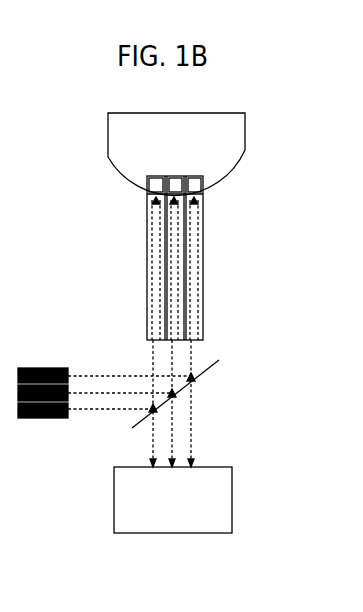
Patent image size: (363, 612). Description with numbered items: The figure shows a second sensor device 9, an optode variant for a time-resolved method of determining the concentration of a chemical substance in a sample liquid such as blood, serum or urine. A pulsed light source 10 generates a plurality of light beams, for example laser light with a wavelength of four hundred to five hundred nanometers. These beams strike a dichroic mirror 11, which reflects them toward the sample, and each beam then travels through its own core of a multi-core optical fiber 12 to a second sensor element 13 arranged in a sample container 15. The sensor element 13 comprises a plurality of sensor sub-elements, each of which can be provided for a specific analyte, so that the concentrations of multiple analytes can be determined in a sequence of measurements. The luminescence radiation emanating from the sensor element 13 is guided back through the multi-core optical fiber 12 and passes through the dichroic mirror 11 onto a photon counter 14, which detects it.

The second sensor device 9 is at (287, 200).
The pulsed light source 10 is at (30, 368).
The dichroic mirror 11 is at (212, 372).
The multi-core optical fiber 12 is at (207, 320).
The second sensor element 13 is at (200, 182).
The photon counter 14 is at (220, 507).
The sample container 15 is at (120, 154).